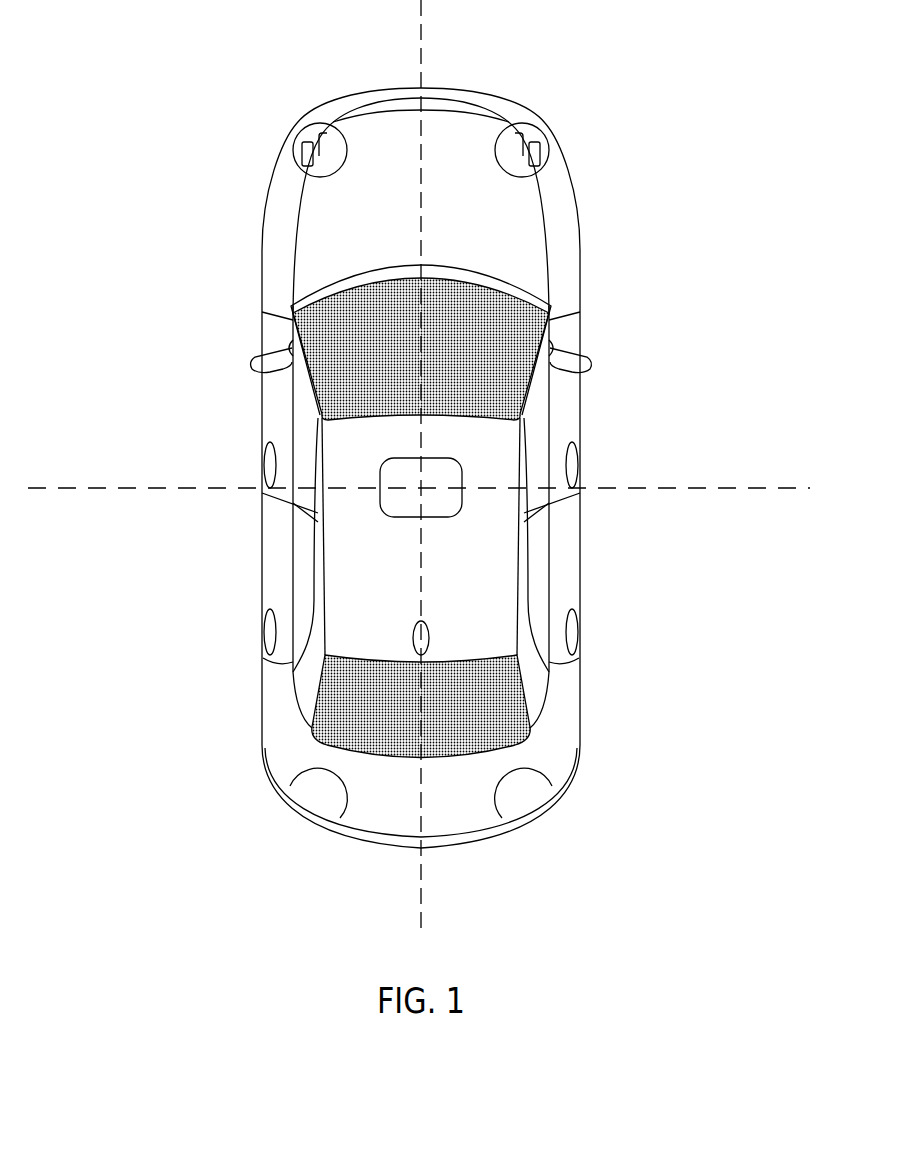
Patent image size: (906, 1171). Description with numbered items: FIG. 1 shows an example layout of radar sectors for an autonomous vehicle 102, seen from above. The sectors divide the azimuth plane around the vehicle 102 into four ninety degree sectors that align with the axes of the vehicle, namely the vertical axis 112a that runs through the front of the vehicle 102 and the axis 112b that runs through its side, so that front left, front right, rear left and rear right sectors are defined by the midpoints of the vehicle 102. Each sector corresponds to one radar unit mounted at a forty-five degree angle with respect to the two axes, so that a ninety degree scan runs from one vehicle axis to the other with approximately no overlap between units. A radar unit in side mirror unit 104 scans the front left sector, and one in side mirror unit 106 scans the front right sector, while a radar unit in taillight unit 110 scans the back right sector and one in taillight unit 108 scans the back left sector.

The autonomous vehicle 102 is at (370, 92).
The side mirror unit 104 is at (262, 352).
The side mirror unit 106 is at (580, 352).
The taillight unit 108 is at (312, 795).
The taillight unit 110 is at (542, 790).
The vertical axis 112a is at (422, 897).
The axis 112b is at (158, 488).